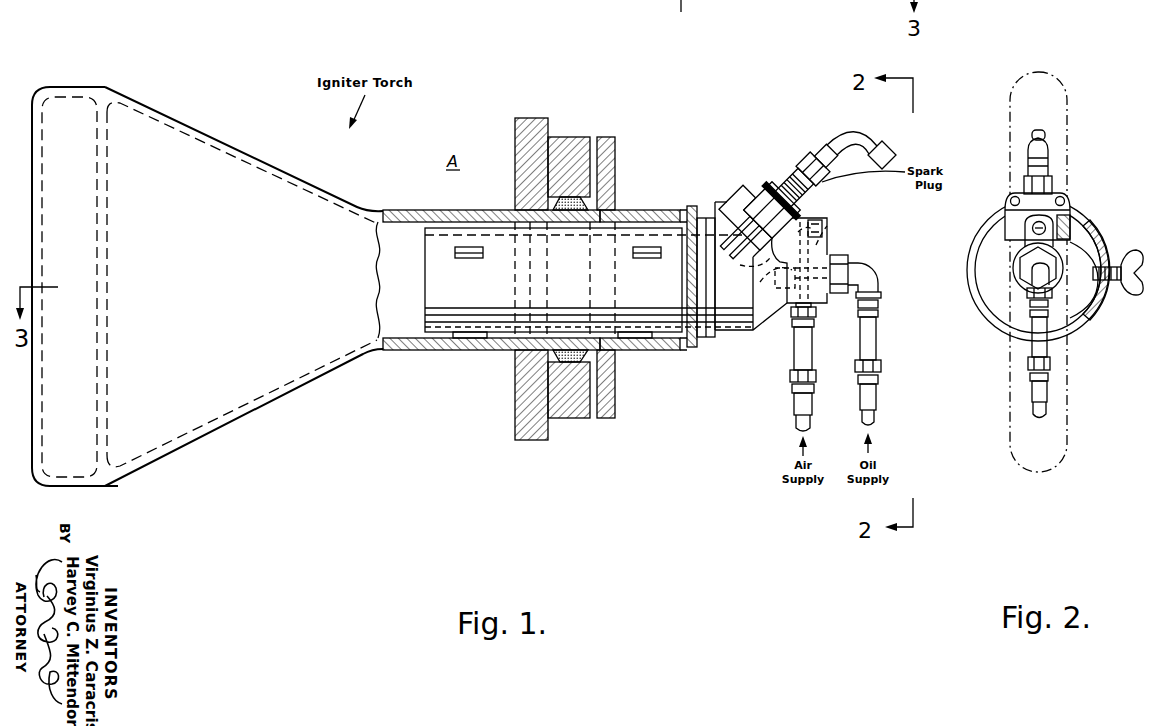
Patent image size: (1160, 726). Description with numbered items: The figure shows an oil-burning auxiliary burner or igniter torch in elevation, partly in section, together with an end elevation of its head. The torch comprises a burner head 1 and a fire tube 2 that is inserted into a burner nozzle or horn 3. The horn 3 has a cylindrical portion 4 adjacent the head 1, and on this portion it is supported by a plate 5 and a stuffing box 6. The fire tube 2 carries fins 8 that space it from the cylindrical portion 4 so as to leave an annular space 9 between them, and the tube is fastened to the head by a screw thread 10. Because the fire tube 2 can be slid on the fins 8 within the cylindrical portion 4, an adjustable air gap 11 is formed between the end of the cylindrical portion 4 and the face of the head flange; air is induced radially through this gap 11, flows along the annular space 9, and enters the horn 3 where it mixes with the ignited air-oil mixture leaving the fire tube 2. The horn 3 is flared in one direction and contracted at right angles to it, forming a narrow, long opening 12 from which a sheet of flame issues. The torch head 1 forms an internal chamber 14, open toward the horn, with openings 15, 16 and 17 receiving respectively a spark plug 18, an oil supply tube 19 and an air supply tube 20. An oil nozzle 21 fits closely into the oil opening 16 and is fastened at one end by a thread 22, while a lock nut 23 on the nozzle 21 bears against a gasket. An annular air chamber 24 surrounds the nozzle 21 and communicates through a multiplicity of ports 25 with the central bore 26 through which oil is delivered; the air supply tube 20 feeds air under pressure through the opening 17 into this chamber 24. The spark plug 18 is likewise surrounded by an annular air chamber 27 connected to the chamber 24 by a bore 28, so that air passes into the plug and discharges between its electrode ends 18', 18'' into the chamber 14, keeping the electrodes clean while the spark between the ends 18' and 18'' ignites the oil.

In FIG. 1, the burner head 1 is at (733, 338).
In FIG. 2, the burner head 1 is at (1003, 317).
In FIG. 1, the fire tube 2 is at (622, 352).
In FIG. 1, the burner horn 3 is at (281, 402).
In FIG. 2, the burner horn 3 is at (1008, 116).
In FIG. 1, the cylindrical portion 4 is at (467, 350).
In FIG. 2, the cylindrical portion 4 is at (968, 296).
In FIG. 1, the plate 5 is at (516, 418).
In FIG. 1, the stuffing box 6 is at (603, 420).
In FIG. 1, the fins 8 is at (468, 260).
In FIG. 1, the annular space 9 is at (440, 337).
In FIG. 1, the screw thread 10 is at (706, 340).
In FIG. 1, the air gap 11 is at (689, 347).
In FIG. 1, the horn opening 12 is at (77, 112).
In FIG. 1, the internal chamber 14 is at (746, 342).
In FIG. 1, the spark plug opening 15 is at (768, 180).
In FIG. 1, the oil opening 16 is at (830, 265).
In FIG. 1, the air opening 17 is at (818, 306).
In FIG. 1, the spark plug 18 is at (801, 172).
In FIG. 2, the spark plug 18 is at (1018, 162).
In FIG. 1, the electrode end 18' is at (709, 216).
In FIG. 1, the electrode end 18'' is at (730, 221).
In FIG. 1, the oil supply tube 19 is at (880, 284).
In FIG. 2, the oil supply tube 19 is at (1036, 268).
In FIG. 1, the air supply tube 20 is at (814, 358).
In FIG. 2, the air supply tube 20 is at (1050, 352).
In FIG. 1, the oil nozzle 21 is at (752, 260).
In FIG. 1, the thread 22 is at (832, 258).
In FIG. 1, the lock nut 23 is at (850, 260).
In FIG. 1, the annular air chamber 24 is at (834, 247).
In FIG. 1, the ports 25 is at (804, 220).
In FIG. 1, the central bore 26 is at (784, 282).
In FIG. 1, the annular air chamber 27 is at (733, 188).
In FIG. 1, the bore 28 is at (822, 240).